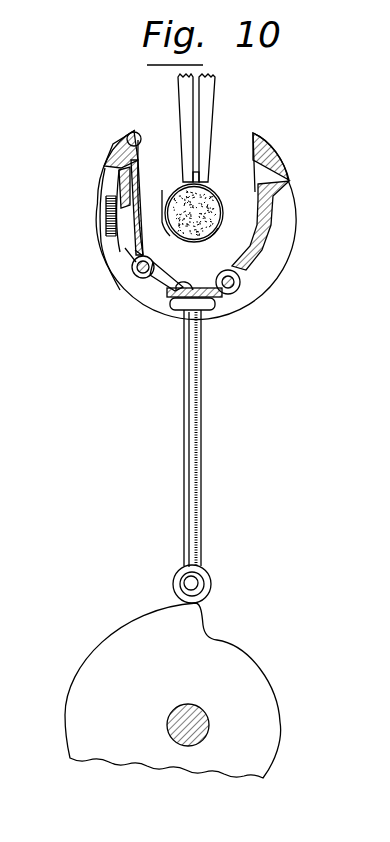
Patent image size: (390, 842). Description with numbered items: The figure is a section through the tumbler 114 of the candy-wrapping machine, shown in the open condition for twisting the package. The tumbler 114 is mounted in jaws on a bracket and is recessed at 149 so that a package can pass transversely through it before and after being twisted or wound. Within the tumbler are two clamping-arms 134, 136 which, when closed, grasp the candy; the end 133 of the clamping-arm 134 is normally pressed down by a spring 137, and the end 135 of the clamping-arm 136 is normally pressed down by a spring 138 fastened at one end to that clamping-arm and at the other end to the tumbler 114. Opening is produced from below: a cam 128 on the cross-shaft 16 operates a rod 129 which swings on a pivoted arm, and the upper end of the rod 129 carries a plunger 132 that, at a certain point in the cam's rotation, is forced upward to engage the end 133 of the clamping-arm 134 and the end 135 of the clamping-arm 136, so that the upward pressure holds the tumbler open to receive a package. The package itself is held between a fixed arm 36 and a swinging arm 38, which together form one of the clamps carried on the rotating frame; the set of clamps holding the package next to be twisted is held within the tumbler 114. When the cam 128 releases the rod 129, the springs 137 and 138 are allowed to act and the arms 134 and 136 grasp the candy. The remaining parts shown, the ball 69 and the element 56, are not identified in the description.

The fixed arm 36 is at (180, 112).
The swinging arm 38 is at (208, 116).
The recess 149 is at (242, 143).
The tumbler 114 is at (126, 147).
The ball 69 is at (202, 207).
The spring 138 is at (100, 233).
The clamping-arm 136 is at (132, 230).
The spring 137 is at (125, 263).
The end of clamping-arm 135 is at (180, 283).
The end of clamping-arm 133 is at (170, 292).
The plunger 132 is at (208, 303).
The clamping-arm 134 is at (250, 268).
The seat 56 is at (208, 239).
The rod 129 is at (200, 483).
The cam 128 is at (158, 618).
The cross-shaft 16 is at (210, 730).